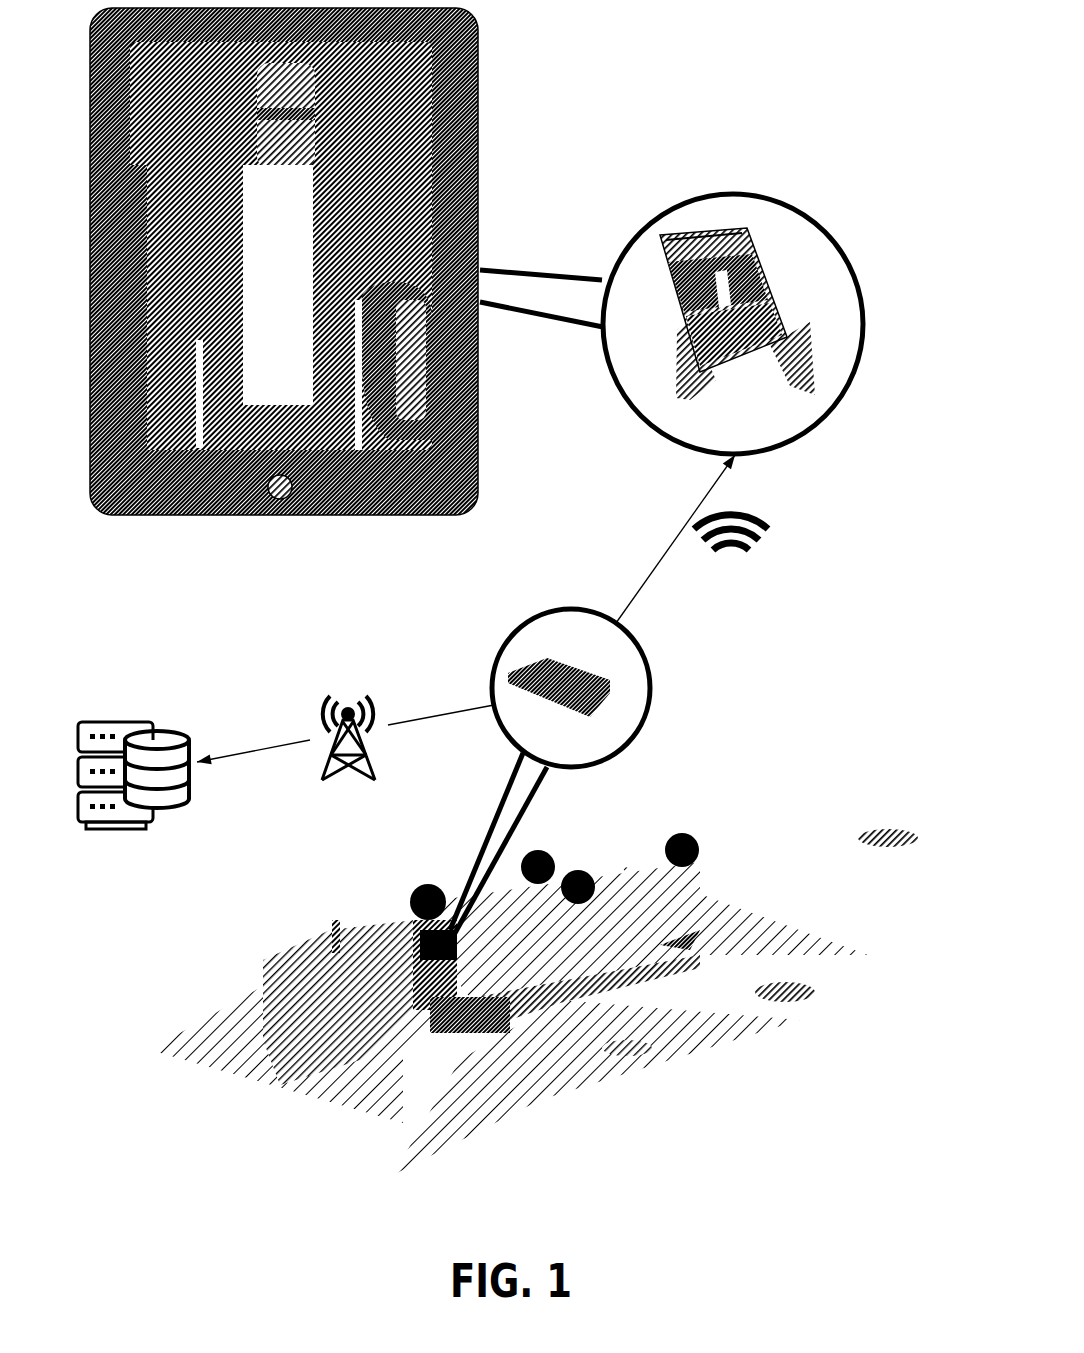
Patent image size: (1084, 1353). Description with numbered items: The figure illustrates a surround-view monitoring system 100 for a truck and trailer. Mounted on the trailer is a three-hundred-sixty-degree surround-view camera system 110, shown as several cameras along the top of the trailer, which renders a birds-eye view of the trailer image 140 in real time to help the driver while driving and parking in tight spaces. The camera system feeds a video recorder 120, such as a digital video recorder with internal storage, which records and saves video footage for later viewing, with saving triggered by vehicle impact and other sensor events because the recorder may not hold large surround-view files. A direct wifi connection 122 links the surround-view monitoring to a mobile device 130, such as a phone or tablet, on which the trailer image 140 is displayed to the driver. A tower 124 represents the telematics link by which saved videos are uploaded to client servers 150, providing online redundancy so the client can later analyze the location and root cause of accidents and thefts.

The surround-view monitoring system 100 is at (795, 69).
The 360-degree surround-view camera system 110 is at (551, 857).
The video recorder 120 is at (593, 752).
The direct wifi connection 122 is at (750, 601).
The cellular tower 124 is at (385, 679).
The mobile device 130 is at (767, 431).
The trailer image 140 is at (346, 261).
The client servers 150 is at (185, 696).